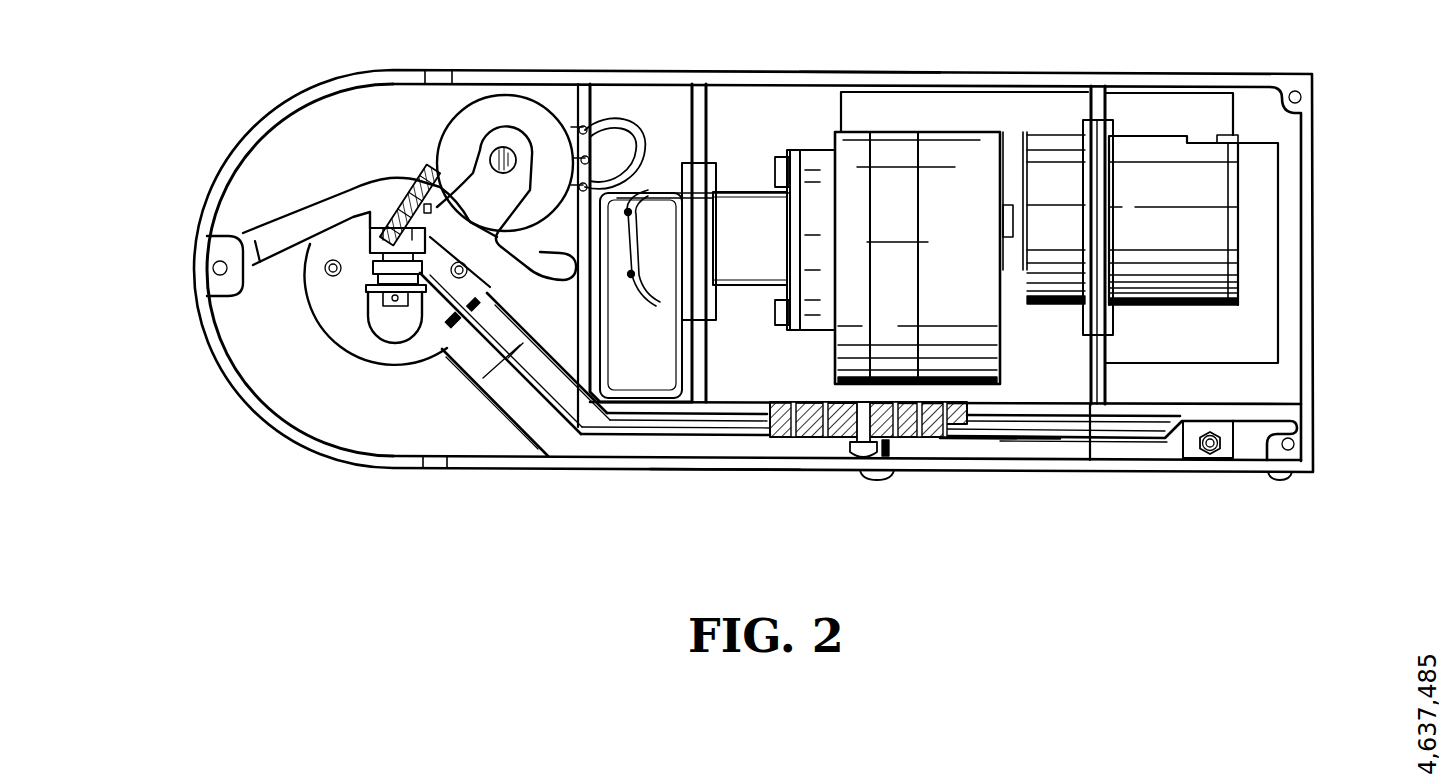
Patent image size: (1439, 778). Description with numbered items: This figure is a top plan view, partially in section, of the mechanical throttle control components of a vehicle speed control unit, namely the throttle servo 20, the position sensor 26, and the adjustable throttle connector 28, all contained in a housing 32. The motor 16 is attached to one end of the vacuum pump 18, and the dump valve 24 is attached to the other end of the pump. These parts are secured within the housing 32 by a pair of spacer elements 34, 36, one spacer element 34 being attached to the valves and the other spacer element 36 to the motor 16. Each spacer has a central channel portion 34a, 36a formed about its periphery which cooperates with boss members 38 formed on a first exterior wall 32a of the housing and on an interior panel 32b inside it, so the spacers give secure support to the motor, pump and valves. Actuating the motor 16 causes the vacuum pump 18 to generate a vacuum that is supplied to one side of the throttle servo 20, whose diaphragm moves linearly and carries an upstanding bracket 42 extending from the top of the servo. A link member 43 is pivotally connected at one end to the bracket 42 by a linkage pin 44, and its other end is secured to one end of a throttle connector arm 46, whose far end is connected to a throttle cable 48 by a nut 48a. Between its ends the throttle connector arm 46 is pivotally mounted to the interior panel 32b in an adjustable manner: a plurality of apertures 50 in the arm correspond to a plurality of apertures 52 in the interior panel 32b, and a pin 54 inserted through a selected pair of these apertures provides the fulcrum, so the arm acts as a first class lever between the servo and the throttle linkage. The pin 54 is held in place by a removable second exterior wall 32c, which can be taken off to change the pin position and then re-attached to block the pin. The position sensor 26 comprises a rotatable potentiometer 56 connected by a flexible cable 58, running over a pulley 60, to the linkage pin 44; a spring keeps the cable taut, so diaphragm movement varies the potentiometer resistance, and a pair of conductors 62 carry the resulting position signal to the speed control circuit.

The motor 16 is at (1185, 182).
The vacuum pump 18 is at (935, 165).
The throttle servo 20 is at (345, 318).
The dump valve 24 is at (748, 272).
The position sensor 26 is at (432, 133).
The adjustable throttle connector 28 is at (1007, 447).
The housing 32 is at (1318, 290).
The first exterior wall 32a is at (873, 71).
The interior panel 32b is at (998, 410).
The second exterior wall 32c is at (720, 465).
The spacer element 34 is at (716, 182).
The central channel portion 34a is at (688, 298).
The spacer element 36 is at (1107, 167).
The central channel portion 36a is at (1097, 288).
The boss members 38 is at (714, 110).
The bracket 42 is at (407, 325).
The link member 43 is at (378, 263).
The linkage pin 44 is at (398, 305).
The throttle connector arm 46 is at (630, 433).
The throttle cable 48 is at (1210, 448).
The nut 48a is at (1219, 450).
The apertures 50 is at (823, 440).
The apertures 52 is at (893, 402).
The pin 54 is at (857, 455).
The rotatable potentiometer 56 is at (497, 105).
The flexible cable 58 is at (425, 175).
The pulley 60 is at (430, 223).
The conductors 62 is at (633, 112).